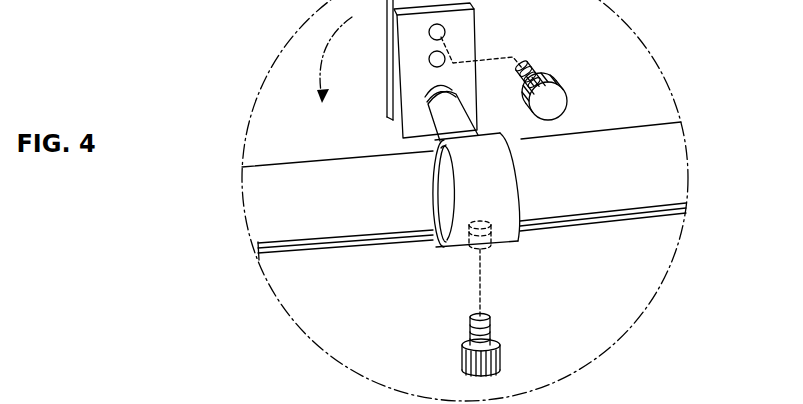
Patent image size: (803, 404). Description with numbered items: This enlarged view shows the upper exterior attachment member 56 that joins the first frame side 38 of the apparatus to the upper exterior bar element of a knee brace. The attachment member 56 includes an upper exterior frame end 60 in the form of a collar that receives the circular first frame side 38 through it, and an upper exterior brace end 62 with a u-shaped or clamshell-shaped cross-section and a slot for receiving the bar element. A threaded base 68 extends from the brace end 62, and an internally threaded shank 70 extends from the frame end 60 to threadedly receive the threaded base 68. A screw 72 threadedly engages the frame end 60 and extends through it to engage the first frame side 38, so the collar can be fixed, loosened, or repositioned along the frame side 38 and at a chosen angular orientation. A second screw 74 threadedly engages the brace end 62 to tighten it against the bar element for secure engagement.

The first frame side 38 is at (353, 235).
The upper exterior attachment member 56 is at (515, 203).
The upper exterior frame end 60 is at (510, 172).
The upper exterior brace end 62 is at (387, 64).
The threaded base 68 is at (427, 97).
The internally threaded shank 70 is at (451, 114).
The screw 72 is at (502, 353).
The screw 74 is at (560, 86).